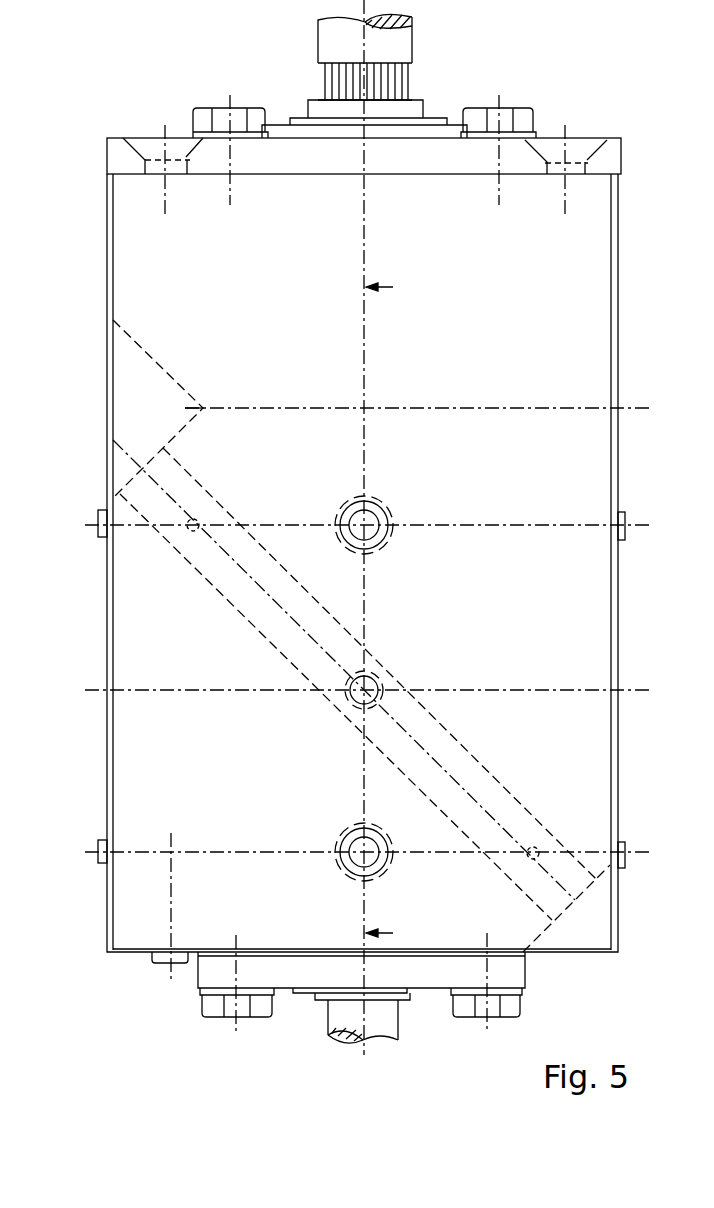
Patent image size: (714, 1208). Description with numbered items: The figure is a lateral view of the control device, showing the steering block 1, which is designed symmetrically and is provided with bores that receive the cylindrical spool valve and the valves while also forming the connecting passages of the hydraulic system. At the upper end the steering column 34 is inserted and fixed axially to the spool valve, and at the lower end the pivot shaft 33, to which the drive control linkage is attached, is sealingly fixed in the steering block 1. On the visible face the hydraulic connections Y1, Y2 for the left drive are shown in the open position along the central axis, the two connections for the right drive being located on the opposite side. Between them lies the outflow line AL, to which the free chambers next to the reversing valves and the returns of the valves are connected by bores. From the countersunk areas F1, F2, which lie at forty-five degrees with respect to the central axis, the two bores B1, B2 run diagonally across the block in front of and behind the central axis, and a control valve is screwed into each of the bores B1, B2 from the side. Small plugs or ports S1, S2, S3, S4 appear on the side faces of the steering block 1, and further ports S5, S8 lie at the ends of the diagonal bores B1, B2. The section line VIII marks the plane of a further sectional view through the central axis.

The steering block 1 is at (602, 466).
The steering column 34 is at (403, 50).
The pivot shaft 33 is at (320, 1026).
The countersunk area F1 is at (110, 409).
The countersunk area F2 is at (178, 427).
The bore B1 is at (314, 696).
The bore B2 is at (160, 492).
The plug S1 is at (100, 512).
The plug S2 is at (103, 865).
The plug S3 is at (624, 540).
The plug S4 is at (625, 868).
The plug S5 is at (188, 527).
The plug S8 is at (540, 850).
The hydraulic connection Y1 is at (370, 518).
The hydraulic connection Y2 is at (375, 840).
The outflow line AL is at (372, 682).
The section line VIII is at (395, 609).